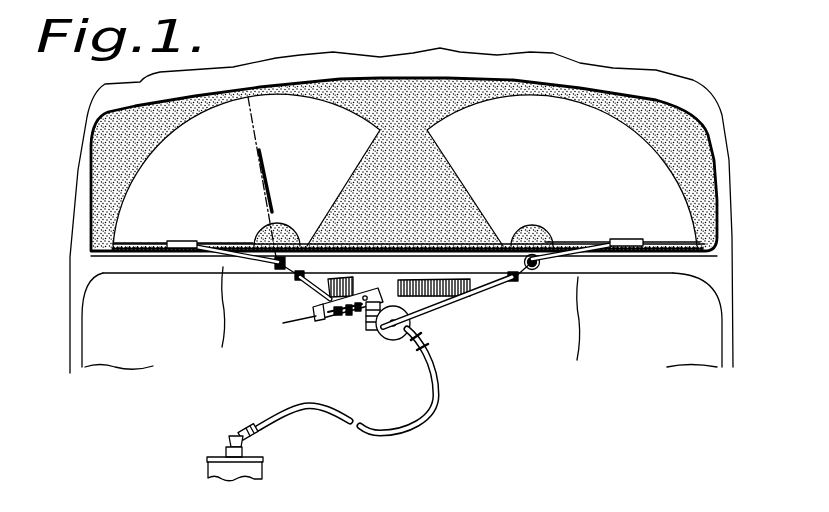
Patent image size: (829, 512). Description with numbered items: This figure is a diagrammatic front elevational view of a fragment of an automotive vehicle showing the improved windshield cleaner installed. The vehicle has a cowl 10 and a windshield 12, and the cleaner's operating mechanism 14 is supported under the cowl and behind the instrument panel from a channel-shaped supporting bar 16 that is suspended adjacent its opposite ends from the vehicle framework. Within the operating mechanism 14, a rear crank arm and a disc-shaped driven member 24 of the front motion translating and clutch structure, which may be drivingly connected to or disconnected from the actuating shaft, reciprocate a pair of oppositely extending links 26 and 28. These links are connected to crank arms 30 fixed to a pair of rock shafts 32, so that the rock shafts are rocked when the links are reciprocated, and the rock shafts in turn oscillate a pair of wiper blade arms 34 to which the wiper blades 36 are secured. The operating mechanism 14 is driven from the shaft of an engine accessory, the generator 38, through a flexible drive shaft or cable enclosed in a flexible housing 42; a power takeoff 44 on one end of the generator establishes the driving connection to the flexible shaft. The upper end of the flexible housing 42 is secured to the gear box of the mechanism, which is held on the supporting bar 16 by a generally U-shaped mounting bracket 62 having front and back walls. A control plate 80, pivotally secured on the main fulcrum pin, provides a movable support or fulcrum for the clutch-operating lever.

The cowl 10 is at (228, 272).
The windshield 12 is at (693, 157).
The operating mechanism 14 is at (390, 294).
The channel-shaped supporting bar 16 is at (421, 281).
The disc-shaped driven member 24 is at (391, 341).
The link 26 is at (318, 286).
The link 28 is at (477, 289).
The crank arm 30 is at (287, 268).
The rock shaft 32 is at (283, 255).
The wiper blade arm 34 is at (217, 258).
The wiper blade 36 is at (145, 244).
The generator 38 is at (221, 476).
The flexible housing 42 is at (404, 435).
The power takeoff 44 is at (232, 434).
The mounting bracket 62 is at (366, 296).
The control plate 80 is at (349, 323).